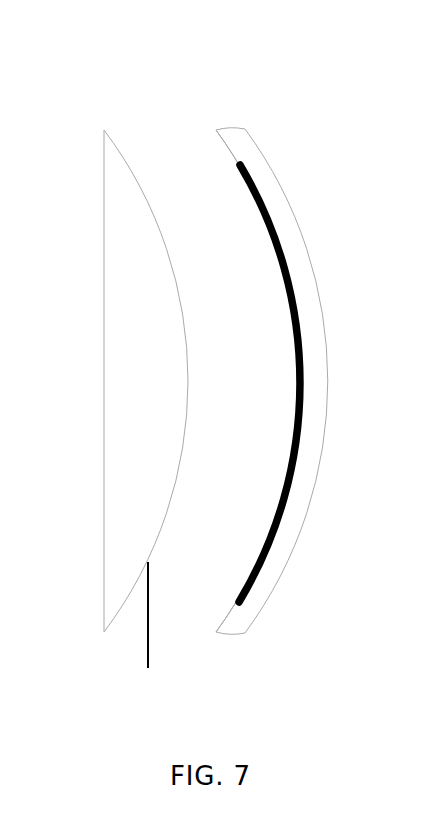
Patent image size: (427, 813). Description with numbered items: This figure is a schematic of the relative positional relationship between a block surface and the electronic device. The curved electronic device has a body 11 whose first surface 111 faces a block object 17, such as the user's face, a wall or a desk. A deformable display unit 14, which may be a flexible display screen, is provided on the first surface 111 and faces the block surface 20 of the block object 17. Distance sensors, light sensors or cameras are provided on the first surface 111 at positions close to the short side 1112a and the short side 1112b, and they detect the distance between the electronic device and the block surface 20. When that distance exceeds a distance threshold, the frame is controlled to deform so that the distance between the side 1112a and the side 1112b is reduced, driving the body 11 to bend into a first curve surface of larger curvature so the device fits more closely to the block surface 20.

The body 11 is at (315, 380).
The first surface 111 is at (233, 152).
The side 1112a is at (230, 128).
The side 1112b is at (227, 638).
The display unit 14 is at (263, 560).
The block object 17 is at (100, 381).
The block surface 20 is at (150, 634).